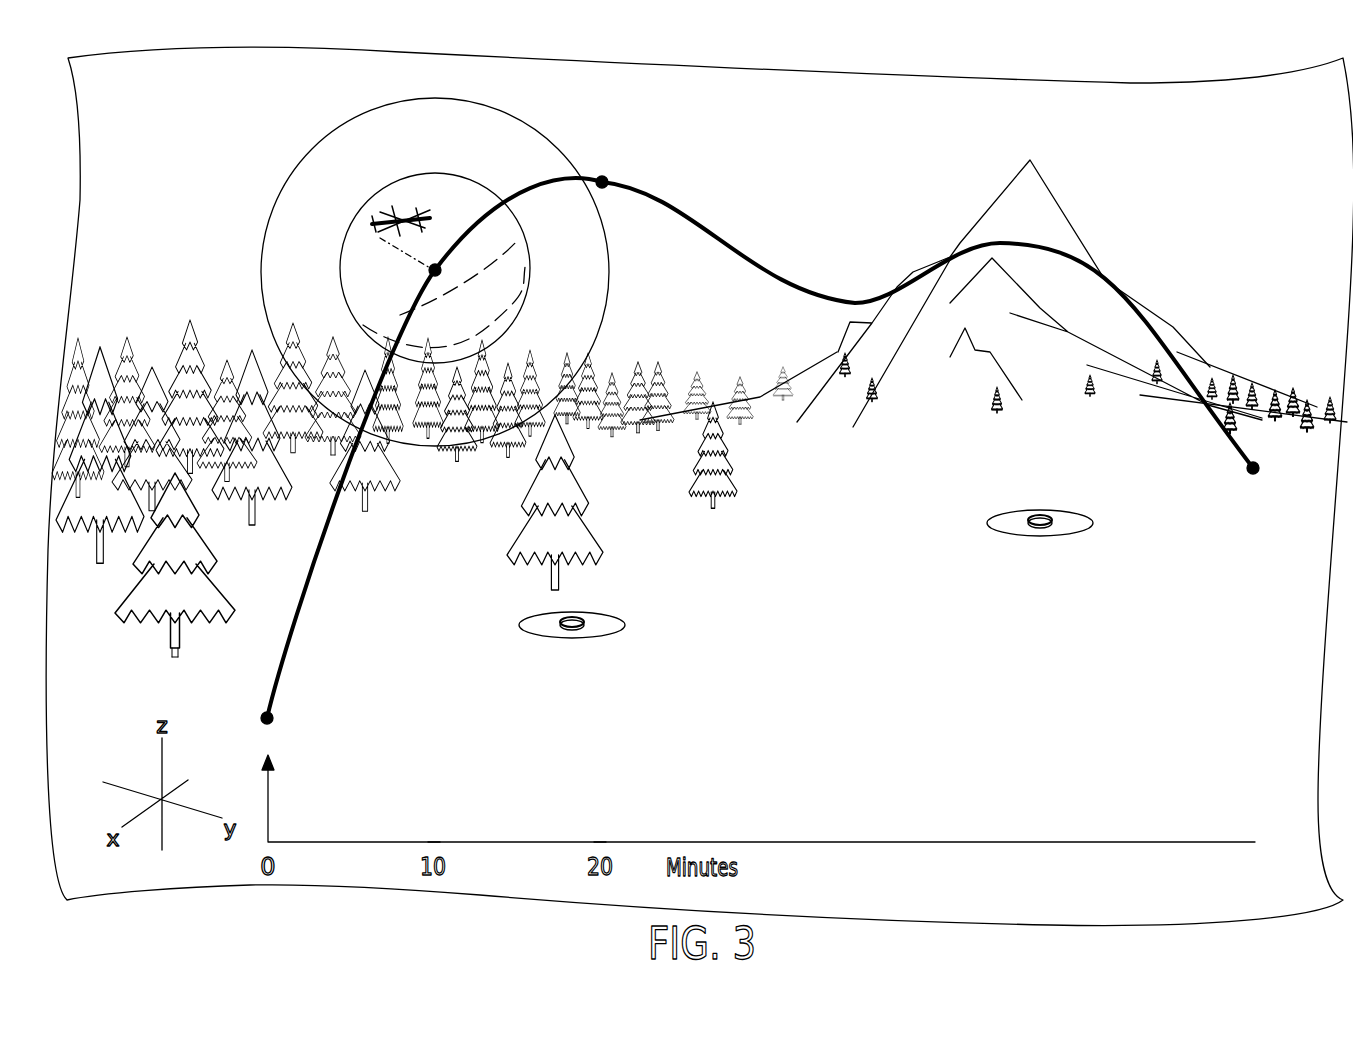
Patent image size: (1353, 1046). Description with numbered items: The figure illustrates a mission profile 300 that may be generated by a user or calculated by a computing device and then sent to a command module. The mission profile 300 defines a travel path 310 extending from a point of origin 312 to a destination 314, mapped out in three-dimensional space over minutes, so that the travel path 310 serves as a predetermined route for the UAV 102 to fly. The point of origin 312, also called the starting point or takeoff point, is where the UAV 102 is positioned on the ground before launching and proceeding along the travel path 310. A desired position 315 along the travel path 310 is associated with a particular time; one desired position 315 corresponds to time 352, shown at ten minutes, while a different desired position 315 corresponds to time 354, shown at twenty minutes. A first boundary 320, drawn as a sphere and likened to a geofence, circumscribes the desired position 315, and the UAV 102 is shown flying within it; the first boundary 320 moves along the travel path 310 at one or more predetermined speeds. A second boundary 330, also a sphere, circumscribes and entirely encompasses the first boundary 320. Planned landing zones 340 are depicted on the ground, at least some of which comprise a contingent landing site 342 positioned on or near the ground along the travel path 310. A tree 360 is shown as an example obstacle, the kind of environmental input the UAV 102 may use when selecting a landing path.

The mission profile 300 is at (1250, 178).
The UAV 102 is at (372, 234).
The travel path 310 is at (772, 268).
The point of origin 312 is at (272, 716).
The destination 314 is at (1254, 474).
The desired position 315 is at (606, 180).
The first boundary 320 is at (442, 173).
The second boundary 330 is at (288, 170).
The planned landing zone 340 is at (530, 634).
The contingent landing site 342 is at (560, 620).
The time 352 is at (436, 843).
The time 354 is at (602, 843).
The tree 360 is at (590, 530).